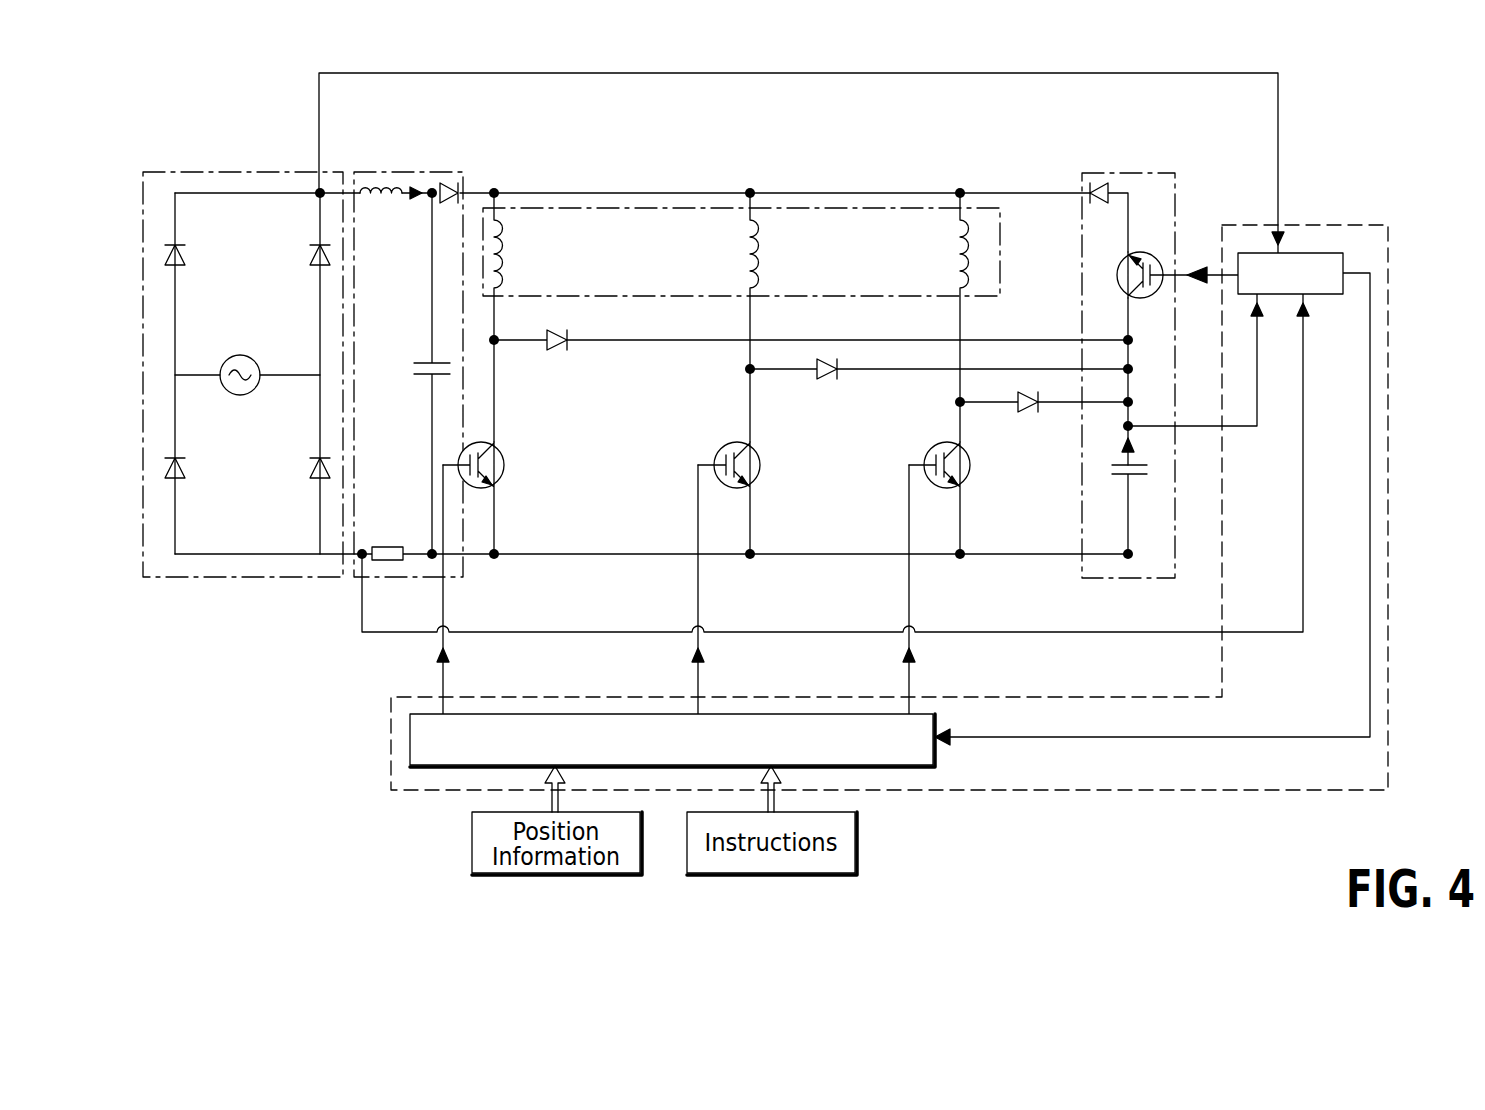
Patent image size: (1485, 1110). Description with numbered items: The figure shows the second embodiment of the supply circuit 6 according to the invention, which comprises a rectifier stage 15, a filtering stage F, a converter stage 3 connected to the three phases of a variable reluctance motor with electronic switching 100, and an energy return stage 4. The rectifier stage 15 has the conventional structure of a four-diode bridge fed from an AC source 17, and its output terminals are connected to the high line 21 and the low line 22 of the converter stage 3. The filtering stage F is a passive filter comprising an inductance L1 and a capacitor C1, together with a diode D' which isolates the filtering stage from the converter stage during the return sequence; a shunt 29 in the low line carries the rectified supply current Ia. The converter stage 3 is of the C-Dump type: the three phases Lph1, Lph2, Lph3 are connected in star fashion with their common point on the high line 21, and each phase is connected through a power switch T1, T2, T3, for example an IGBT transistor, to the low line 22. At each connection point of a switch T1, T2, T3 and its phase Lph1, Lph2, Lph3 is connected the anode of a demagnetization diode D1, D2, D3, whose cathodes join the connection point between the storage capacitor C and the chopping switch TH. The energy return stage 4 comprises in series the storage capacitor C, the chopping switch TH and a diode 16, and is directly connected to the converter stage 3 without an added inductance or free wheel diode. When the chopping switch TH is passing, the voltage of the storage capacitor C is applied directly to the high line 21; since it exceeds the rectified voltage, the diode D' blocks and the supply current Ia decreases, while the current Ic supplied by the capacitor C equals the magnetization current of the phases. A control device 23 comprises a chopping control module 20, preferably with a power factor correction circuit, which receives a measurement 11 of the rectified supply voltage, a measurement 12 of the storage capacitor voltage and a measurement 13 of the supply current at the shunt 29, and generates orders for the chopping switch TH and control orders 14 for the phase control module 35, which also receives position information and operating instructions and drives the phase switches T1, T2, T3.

The rectifier stage 15 is at (262, 170).
The AC voltage source 17 is at (240, 354).
The low line 22 is at (417, 557).
The inductance L1 is at (375, 190).
The supply current Ia is at (410, 212).
The diode D' is at (479, 154).
The capacitor C1 is at (412, 367).
The shunt 29 is at (388, 545).
The filtering stage F is at (386, 578).
The converter stage 3 is at (803, 207).
The variable reluctance motor with electronic switching 100 is at (885, 207).
The high line 21 is at (563, 193).
The phase Lph1 is at (507, 258).
The phase Lph2 is at (763, 258).
The phase Lph3 is at (972, 262).
The demagnetization diode D1 is at (555, 352).
The demagnetization diode D2 is at (823, 382).
The demagnetization diode D3 is at (1030, 414).
The power switch T1 is at (502, 470).
The power switch T2 is at (758, 470).
The power switch T3 is at (968, 478).
The diode 16 is at (1107, 190).
The chopping switch TH is at (1150, 254).
The current supplied by the capacitor Ic is at (1145, 381).
The storage capacitor C is at (1137, 476).
The energy return stage 4 is at (1107, 580).
The chopping control module 20 is at (1328, 252).
The measurement of the rectified supply voltage 11 is at (1280, 98).
The measurement of the voltage at the terminals of the storage capacitor 12 is at (1253, 337).
The measurement of the rectified supply current 13 is at (1300, 385).
The control orders 14 is at (1372, 662).
The supply circuit 6 is at (1412, 487).
The control device 23 is at (390, 733).
The control module 35 is at (917, 713).